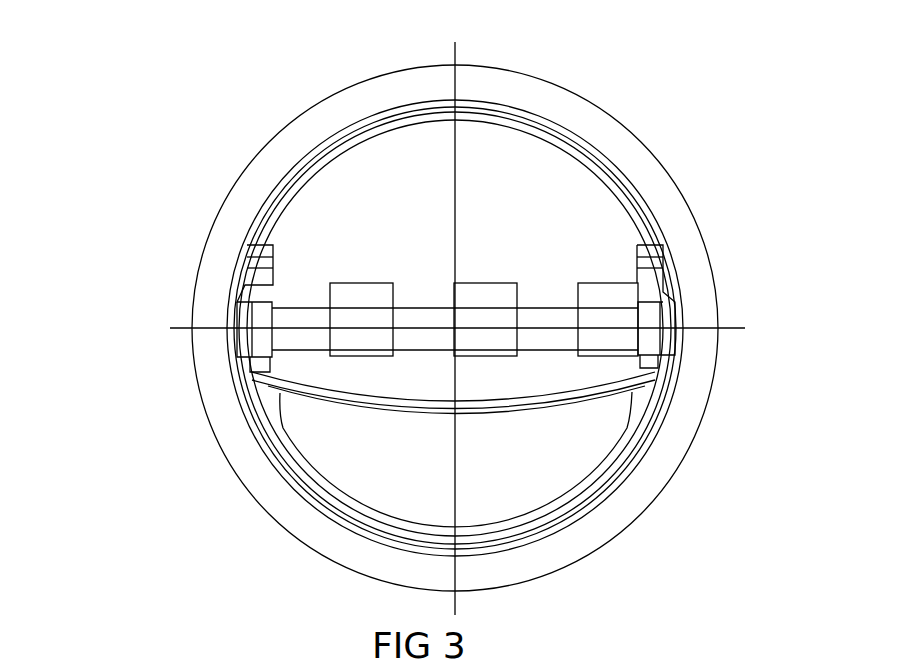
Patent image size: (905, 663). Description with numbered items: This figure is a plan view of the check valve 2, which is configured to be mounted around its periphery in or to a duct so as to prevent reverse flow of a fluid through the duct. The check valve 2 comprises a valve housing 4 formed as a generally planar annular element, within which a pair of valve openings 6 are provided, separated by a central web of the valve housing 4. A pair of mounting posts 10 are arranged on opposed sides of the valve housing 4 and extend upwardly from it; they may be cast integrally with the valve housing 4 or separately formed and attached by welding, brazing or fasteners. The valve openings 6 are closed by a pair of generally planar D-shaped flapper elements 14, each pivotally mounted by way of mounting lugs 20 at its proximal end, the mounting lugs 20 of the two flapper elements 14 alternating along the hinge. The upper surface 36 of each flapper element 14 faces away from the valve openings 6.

The check valve 2 is at (93, 238).
The valve housing 4 is at (257, 158).
The valve openings 6 is at (350, 458).
The mounting posts 10 is at (670, 318).
The flapper elements 14 is at (603, 372).
The mounting lugs 20 is at (285, 343).
The upper surface 36 is at (523, 186).